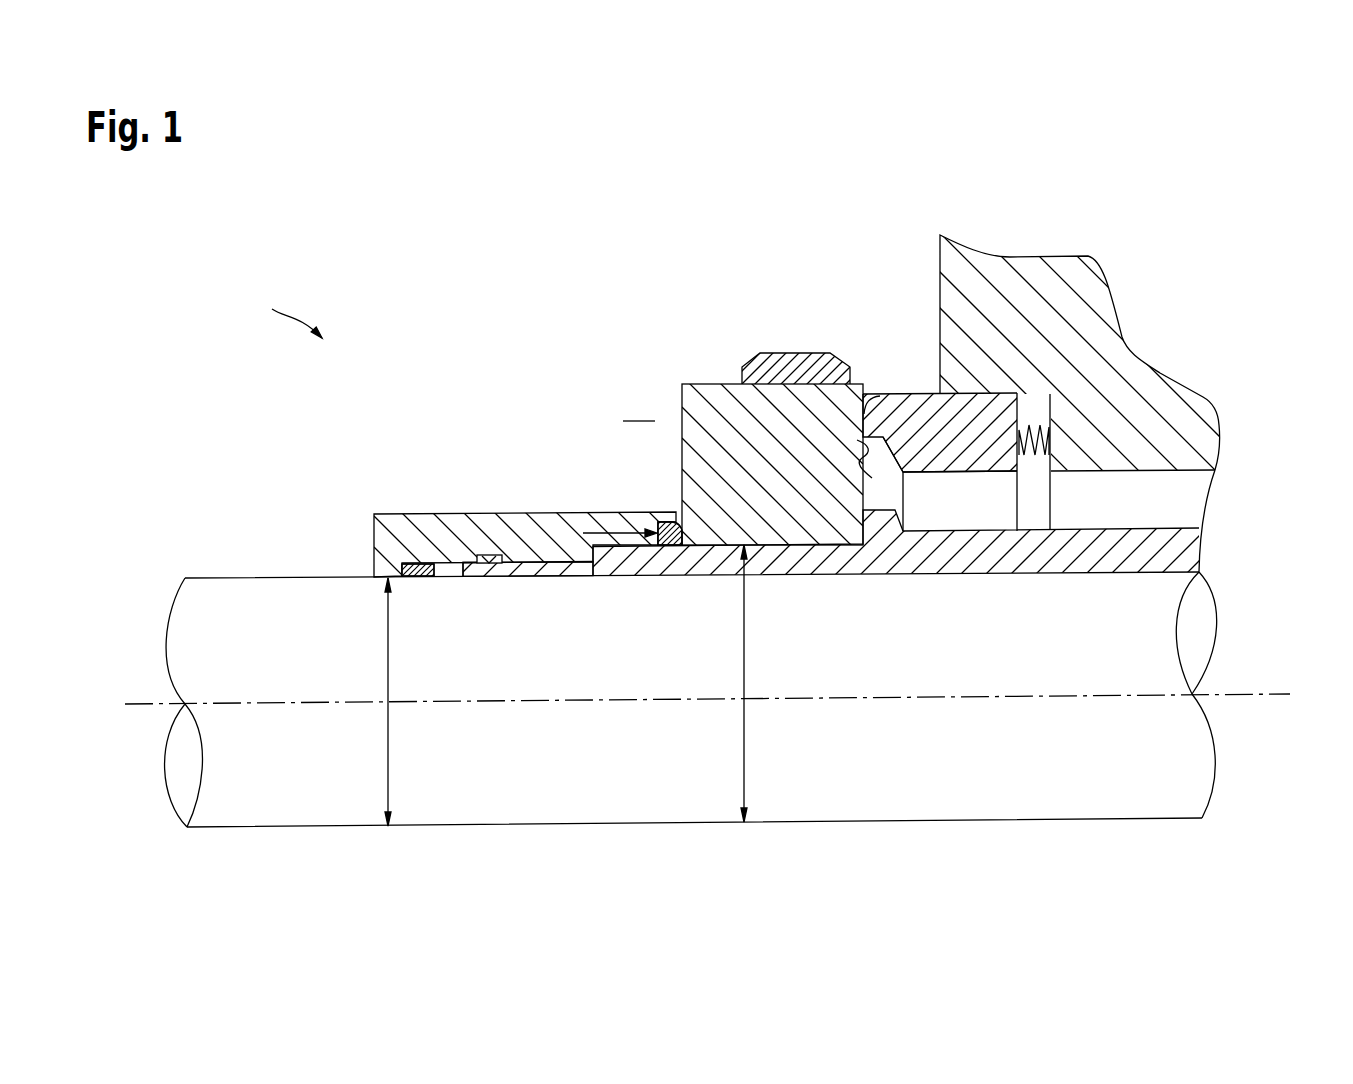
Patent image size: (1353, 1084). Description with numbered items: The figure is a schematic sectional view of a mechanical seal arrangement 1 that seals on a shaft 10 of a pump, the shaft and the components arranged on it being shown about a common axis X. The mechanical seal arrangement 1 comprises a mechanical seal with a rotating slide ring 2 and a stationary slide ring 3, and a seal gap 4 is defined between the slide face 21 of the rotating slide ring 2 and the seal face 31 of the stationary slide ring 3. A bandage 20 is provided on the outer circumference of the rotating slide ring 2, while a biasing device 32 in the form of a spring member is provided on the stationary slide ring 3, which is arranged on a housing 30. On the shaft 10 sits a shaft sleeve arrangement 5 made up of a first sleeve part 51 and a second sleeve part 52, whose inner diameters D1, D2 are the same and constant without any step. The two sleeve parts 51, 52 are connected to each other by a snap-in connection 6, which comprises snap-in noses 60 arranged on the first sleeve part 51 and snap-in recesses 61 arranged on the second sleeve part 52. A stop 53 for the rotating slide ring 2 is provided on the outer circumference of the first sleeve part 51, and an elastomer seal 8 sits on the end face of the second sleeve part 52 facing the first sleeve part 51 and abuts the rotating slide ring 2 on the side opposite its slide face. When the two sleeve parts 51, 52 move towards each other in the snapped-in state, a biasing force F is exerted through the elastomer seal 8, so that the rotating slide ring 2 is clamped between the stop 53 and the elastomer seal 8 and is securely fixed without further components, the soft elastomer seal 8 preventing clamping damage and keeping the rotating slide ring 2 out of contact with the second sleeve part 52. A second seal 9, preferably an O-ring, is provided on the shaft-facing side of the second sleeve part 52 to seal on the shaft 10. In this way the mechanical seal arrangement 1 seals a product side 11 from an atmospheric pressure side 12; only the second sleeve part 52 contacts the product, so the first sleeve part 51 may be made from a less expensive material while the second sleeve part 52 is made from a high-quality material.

The mechanical seal arrangement 1 is at (287, 307).
The rotating slide ring 2 is at (730, 407).
The stationary slide ring 3 is at (992, 427).
The seal gap 4 is at (880, 415).
The shaft sleeve arrangement 5 is at (623, 508).
The snap-in connection 6 is at (486, 588).
The elastomer seal 8 is at (668, 522).
The second seal 9 is at (420, 562).
The shaft 10 is at (237, 603).
The product side 11 is at (639, 407).
The atmospheric pressure side 12 is at (1140, 512).
The bandage 20 is at (780, 370).
The slide face 21 is at (856, 452).
The housing 30 is at (1160, 430).
The seal face 31 is at (905, 388).
The biasing device 32 is at (1030, 420).
The first sleeve part 51 is at (838, 570).
The second sleeve part 52 is at (545, 540).
The stop 53 is at (900, 462).
The snap-in nose 60 is at (498, 560).
The snap-in recess 61 is at (480, 563).
The inner diameter D1 is at (743, 743).
The inner diameter D2 is at (387, 745).
The biasing force F is at (605, 530).
The axis X is at (702, 700).